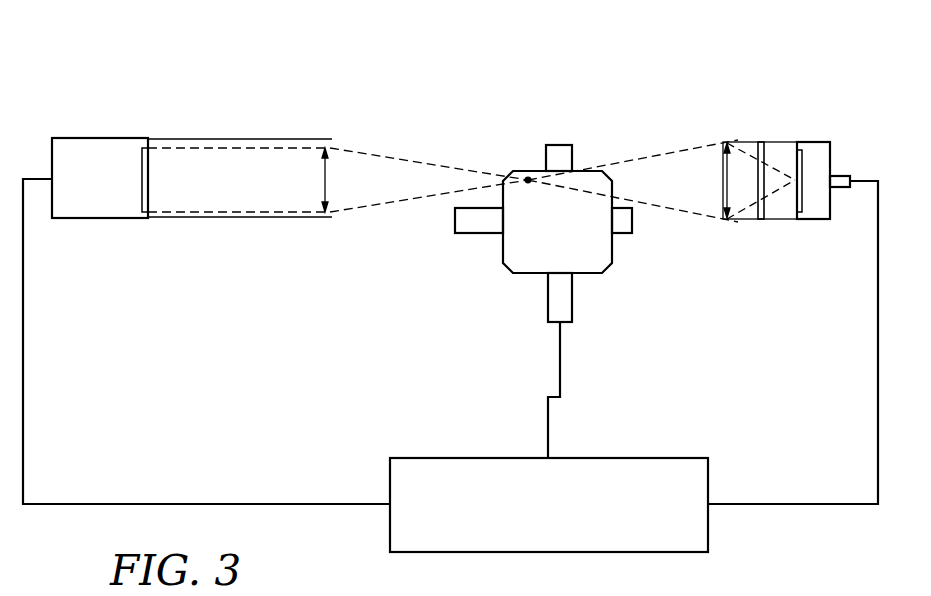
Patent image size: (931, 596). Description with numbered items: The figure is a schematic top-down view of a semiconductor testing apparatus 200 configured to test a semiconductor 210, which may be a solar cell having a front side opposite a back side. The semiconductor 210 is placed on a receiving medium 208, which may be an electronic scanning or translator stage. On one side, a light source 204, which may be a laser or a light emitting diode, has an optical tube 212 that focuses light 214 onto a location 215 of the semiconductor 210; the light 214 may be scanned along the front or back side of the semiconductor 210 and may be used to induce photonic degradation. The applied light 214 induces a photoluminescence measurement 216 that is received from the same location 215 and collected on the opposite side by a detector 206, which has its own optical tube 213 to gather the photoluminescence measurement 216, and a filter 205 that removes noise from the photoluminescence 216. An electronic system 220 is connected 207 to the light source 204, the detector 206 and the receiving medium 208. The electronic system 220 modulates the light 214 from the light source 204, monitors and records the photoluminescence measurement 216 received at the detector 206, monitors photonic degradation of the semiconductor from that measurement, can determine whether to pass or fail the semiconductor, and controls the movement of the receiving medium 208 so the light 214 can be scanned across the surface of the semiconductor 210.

The semiconductor testing apparatus 200 is at (663, 51).
The light source 204 is at (113, 193).
The filter 205 is at (764, 205).
The detector 206 is at (813, 158).
The connection 207 is at (24, 355).
The receiving medium 208 is at (573, 300).
The semiconductor 210 is at (585, 250).
The optical tube 212 is at (260, 138).
The optical tube 213 is at (780, 140).
The light 214 is at (370, 153).
The location 215 is at (528, 178).
The photoluminescence measurement 216 is at (680, 146).
The electronic system 220 is at (570, 516).